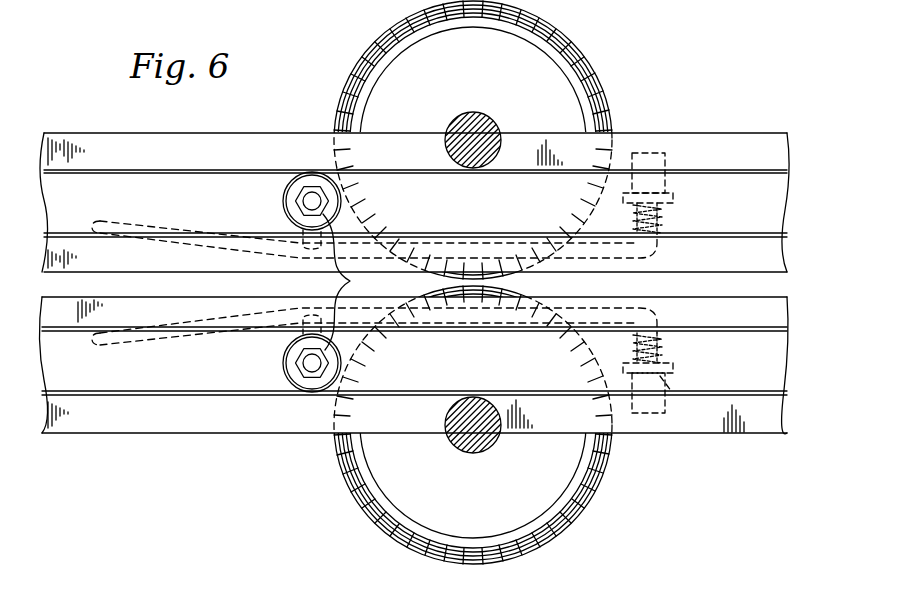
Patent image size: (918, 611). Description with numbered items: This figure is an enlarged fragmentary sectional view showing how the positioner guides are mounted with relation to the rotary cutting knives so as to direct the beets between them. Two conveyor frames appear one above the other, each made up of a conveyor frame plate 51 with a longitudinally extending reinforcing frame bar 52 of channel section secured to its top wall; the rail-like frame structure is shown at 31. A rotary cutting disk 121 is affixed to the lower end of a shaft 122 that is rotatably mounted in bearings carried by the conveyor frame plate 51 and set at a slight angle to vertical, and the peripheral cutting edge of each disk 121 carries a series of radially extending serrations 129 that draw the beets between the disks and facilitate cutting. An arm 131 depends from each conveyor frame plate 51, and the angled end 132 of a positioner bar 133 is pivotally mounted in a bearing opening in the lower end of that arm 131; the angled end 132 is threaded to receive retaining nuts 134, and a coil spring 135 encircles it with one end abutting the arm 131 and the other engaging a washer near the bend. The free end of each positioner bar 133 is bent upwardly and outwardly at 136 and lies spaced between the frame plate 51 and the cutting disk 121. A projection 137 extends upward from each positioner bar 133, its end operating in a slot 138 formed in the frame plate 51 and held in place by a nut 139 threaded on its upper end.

The rail 31 is at (690, 300).
The conveyor frame plate 51 is at (275, 147).
The reinforcing frame bar 52 is at (195, 190).
The rotary cutting disk 121 is at (603, 110).
The shaft 122 is at (490, 118).
The serrations 129 is at (366, 55).
The arm 131 is at (672, 195).
The angled end 132 is at (648, 153).
The positioner bar 133 is at (582, 297).
The retaining nuts 134 is at (667, 400).
The coil spring 135 is at (668, 210).
The bent free end 136 is at (118, 228).
The projection 137 is at (312, 392).
The slot 138 is at (283, 345).
The nut 139 is at (359, 282).